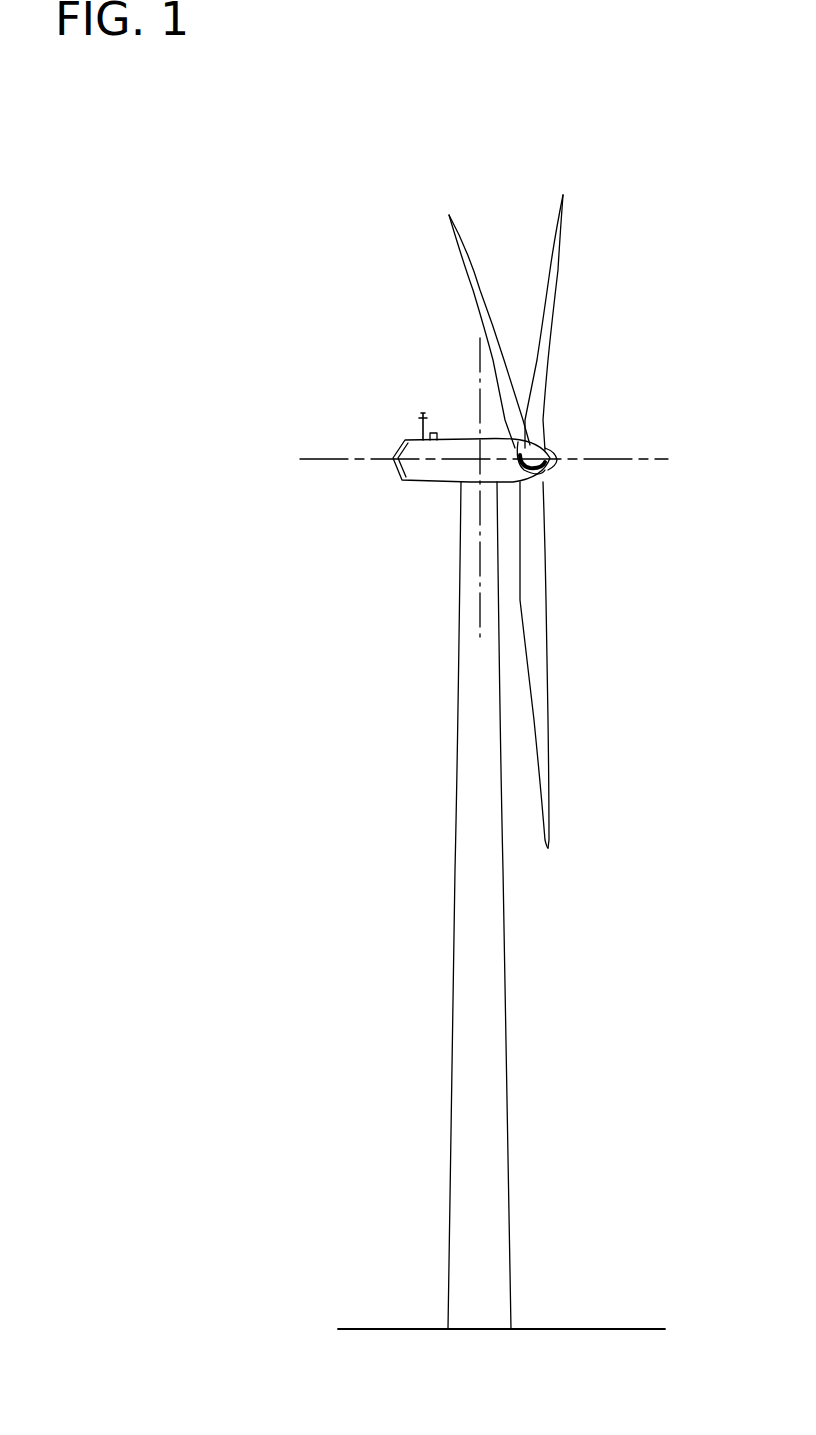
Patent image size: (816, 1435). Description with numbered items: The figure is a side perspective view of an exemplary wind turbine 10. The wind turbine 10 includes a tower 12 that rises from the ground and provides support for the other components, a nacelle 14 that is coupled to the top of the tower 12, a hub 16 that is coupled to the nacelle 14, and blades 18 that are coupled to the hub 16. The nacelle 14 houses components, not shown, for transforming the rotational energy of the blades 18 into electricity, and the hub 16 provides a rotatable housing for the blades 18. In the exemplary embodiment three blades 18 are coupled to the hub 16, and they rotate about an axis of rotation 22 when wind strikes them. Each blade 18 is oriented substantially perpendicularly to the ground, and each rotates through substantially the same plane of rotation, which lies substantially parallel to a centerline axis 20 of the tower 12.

The wind turbine 10 is at (198, 205).
The tower 12 is at (451, 1077).
The nacelle 14 is at (433, 482).
The hub 16 is at (553, 447).
The blade 18 is at (546, 648).
The centerline axis 20 is at (478, 376).
The axis of rotation 22 is at (627, 460).